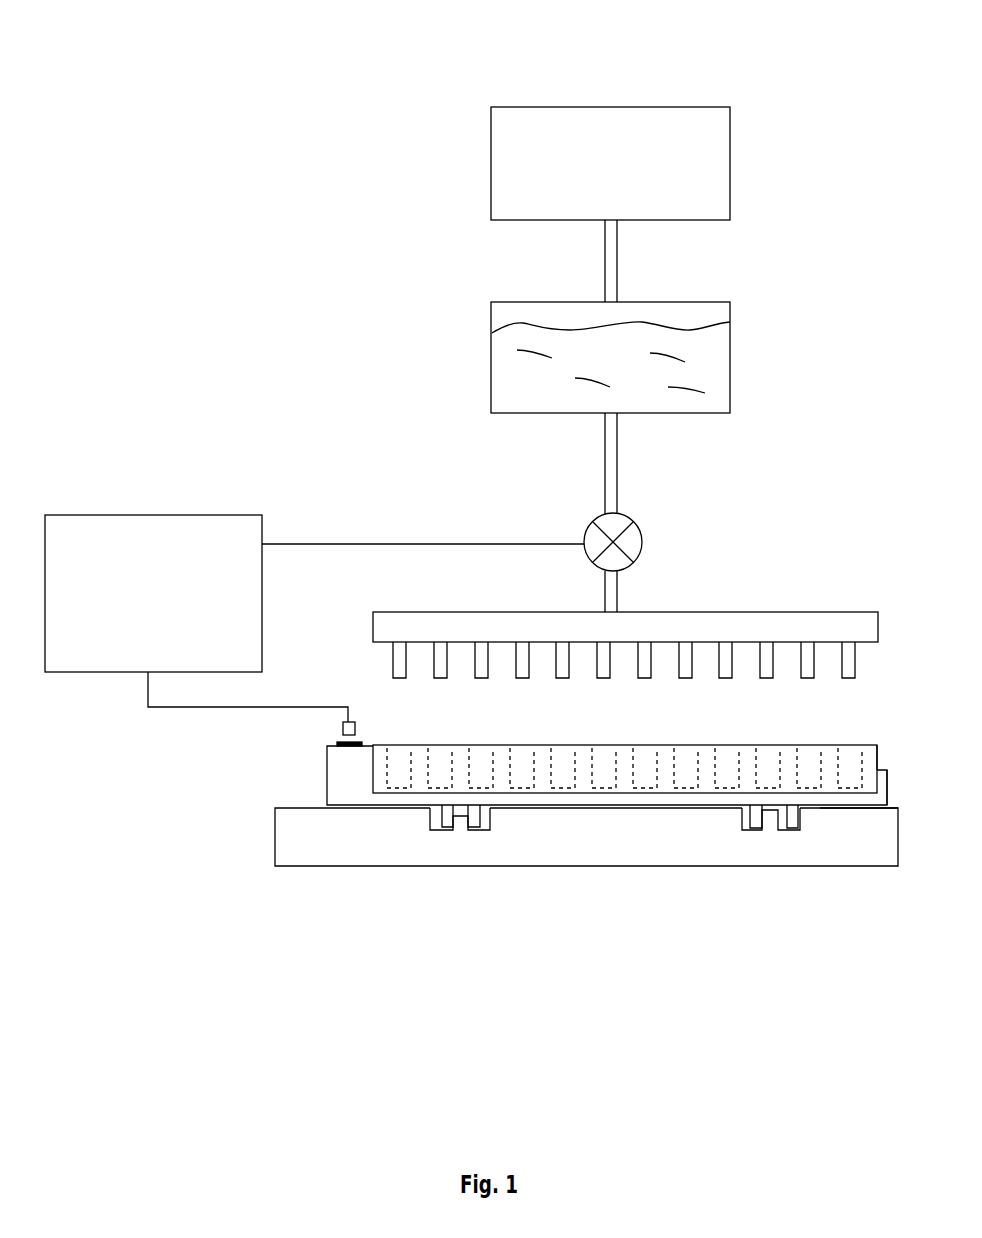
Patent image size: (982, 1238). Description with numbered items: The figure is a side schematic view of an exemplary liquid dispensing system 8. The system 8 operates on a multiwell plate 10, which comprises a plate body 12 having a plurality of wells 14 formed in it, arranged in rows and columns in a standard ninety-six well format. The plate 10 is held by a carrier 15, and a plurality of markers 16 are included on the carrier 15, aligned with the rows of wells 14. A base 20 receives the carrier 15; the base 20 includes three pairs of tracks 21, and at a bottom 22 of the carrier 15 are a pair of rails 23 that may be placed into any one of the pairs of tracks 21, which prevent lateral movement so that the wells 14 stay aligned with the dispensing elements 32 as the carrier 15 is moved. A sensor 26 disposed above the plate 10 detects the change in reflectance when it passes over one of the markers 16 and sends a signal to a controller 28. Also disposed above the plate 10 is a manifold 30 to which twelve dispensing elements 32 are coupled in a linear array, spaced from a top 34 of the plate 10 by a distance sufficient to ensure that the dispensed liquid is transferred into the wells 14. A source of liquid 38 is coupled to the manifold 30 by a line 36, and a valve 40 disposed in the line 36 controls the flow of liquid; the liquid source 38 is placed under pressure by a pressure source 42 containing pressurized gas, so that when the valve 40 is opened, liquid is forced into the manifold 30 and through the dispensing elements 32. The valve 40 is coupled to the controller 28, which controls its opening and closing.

The liquid dispensing system 8 is at (682, 82).
The pressure source 42 is at (740, 172).
The source of liquid 38 is at (742, 365).
The line 36 is at (625, 466).
The valve 40 is at (655, 547).
The controller 28 is at (233, 505).
The manifold 30 is at (785, 620).
The dispensing elements 32 is at (847, 678).
The sensor 26 is at (330, 727).
The markers 16 is at (362, 742).
The carrier 15 is at (337, 777).
The multiwell plate 10 is at (625, 748).
The wells 14 is at (398, 747).
The top 34 is at (875, 745).
The plate body 12 is at (867, 770).
The base 20 is at (292, 860).
The bottom 22 is at (828, 802).
The tracks 21 is at (435, 830).
The rails 23 is at (458, 815).